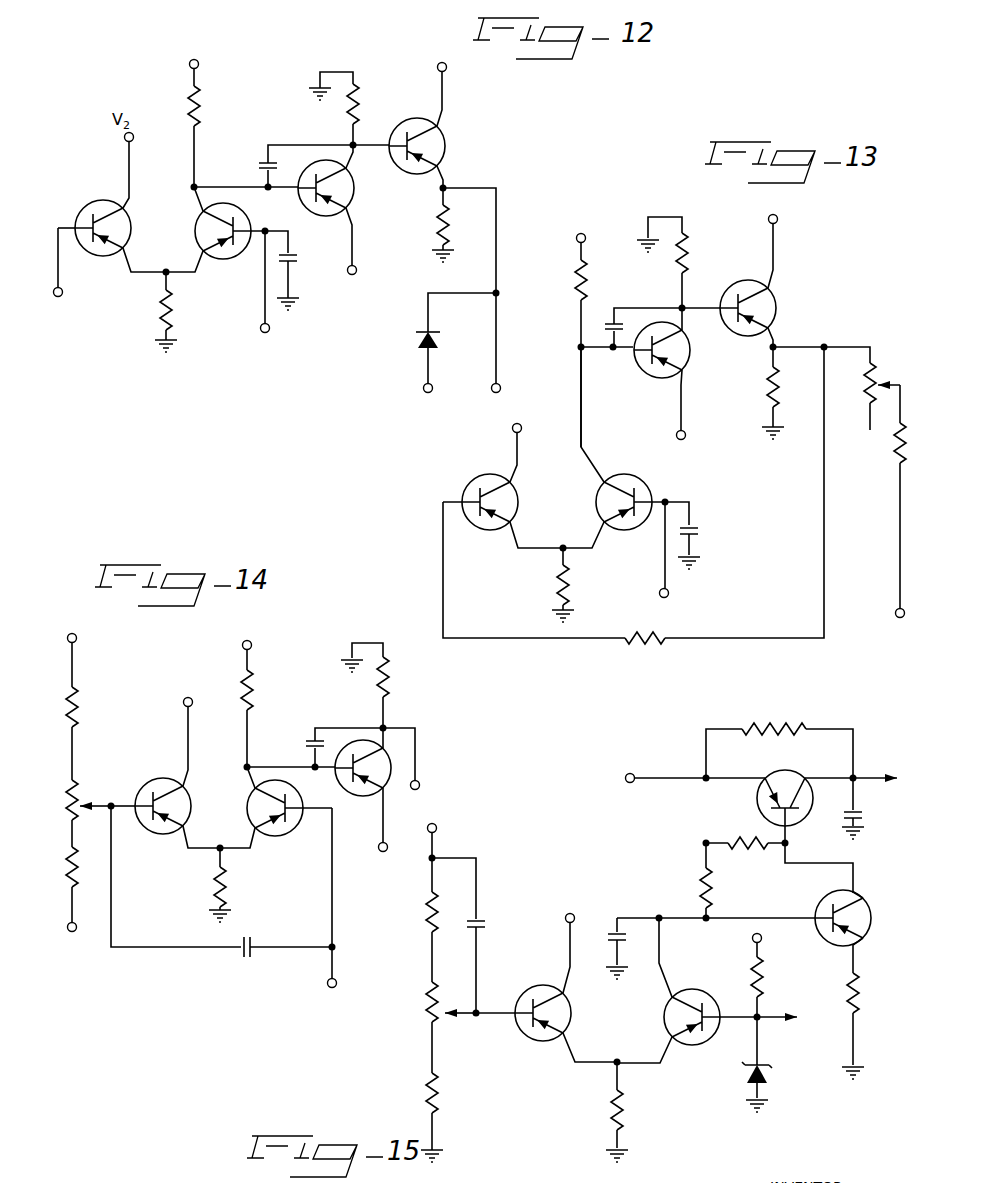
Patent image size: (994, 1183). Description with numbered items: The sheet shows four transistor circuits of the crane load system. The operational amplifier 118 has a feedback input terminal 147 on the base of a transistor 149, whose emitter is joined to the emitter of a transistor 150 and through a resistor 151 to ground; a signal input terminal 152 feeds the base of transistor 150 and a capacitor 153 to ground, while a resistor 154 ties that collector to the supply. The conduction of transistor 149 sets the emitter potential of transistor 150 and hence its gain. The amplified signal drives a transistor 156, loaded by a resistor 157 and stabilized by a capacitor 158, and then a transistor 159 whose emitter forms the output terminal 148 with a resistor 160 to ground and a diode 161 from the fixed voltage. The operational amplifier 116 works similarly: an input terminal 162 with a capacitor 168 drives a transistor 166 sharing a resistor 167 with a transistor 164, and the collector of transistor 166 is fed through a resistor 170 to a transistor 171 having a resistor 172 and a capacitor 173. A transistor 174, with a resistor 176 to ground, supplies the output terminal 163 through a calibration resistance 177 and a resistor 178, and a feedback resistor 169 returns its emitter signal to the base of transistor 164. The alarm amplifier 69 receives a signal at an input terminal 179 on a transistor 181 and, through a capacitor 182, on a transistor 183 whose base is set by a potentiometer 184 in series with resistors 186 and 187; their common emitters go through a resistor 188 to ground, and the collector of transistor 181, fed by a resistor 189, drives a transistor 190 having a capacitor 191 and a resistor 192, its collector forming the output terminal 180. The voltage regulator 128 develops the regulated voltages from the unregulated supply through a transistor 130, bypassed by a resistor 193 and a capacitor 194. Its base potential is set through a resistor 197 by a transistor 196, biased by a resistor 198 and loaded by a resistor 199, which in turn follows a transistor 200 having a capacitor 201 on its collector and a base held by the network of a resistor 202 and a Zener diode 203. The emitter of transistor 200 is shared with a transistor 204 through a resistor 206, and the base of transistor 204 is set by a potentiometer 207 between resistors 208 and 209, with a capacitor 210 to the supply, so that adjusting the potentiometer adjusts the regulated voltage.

In FIG. 12, the operational amplifier 118 is at (462, 131).
In FIG. 12, the terminal 147 is at (69, 284).
In FIG. 12, the terminal 148 is at (498, 386).
In FIG. 12, the transistor 149 is at (94, 209).
In FIG. 12, the transistor 150 is at (195, 232).
In FIG. 12, the resistor 151 is at (175, 315).
In FIG. 12, the terminal 152 is at (270, 328).
In FIG. 12, the capacitor 153 is at (296, 262).
In FIG. 12, the resistor 154 is at (202, 117).
In FIG. 12, the transistor 156 is at (354, 197).
In FIG. 12, the resistor 157 is at (360, 113).
In FIG. 12, the capacitor 158 is at (263, 162).
In FIG. 12, the transistor 159 is at (446, 155).
In FIG. 12, the resistor 160 is at (443, 225).
In FIG. 12, the diode 161 is at (418, 342).
In FIG. 13, the operational amplifier 116 is at (817, 280).
In FIG. 13, the terminal 162 is at (669, 597).
In FIG. 13, the terminal 163 is at (900, 618).
In FIG. 13, the transistor 164 is at (473, 475).
In FIG. 13, the transistor 166 is at (642, 478).
In FIG. 13, the resistor 167 is at (548, 582).
In FIG. 13, the capacitor 168 is at (695, 535).
In FIG. 13, the feedback resistor 169 is at (645, 648).
In FIG. 13, the resistor 170 is at (586, 280).
In FIG. 13, the transistor 171 is at (690, 362).
In FIG. 13, the resistor 172 is at (690, 252).
In FIG. 13, the capacitor 173 is at (612, 317).
In FIG. 13, the transistor 174 is at (777, 305).
In FIG. 13, the resistor 176 is at (773, 383).
In FIG. 13, the calibration resistance 177 is at (875, 375).
In FIG. 13, the resistor 178 is at (895, 465).
In FIG. 14, the alarm amplifier 69 is at (430, 718).
In FIG. 14, the terminal 179 is at (326, 988).
In FIG. 14, the terminal 180 is at (420, 786).
In FIG. 14, the transistor 181 is at (292, 833).
In FIG. 14, the capacitor 182 is at (240, 953).
In FIG. 14, the transistor 183 is at (163, 778).
In FIG. 14, the potentiometer 184 is at (77, 787).
In FIG. 14, the resistor 186 is at (78, 715).
In FIG. 14, the resistor 187 is at (77, 867).
In FIG. 14, the resistor 188 is at (216, 892).
In FIG. 14, the resistor 189 is at (255, 690).
In FIG. 14, the transistor 190 is at (358, 798).
In FIG. 14, the capacitor 191 is at (314, 738).
In FIG. 14, the resistor 192 is at (395, 663).
In FIG. 15, the voltage regulator 128 is at (393, 1058).
In FIG. 15, the transistor 130 is at (792, 773).
In FIG. 15, the resistor 193 is at (773, 723).
In FIG. 15, the capacitor 194 is at (865, 813).
In FIG. 15, the transistor 196 is at (872, 918).
In FIG. 15, the resistor 197 is at (747, 847).
In FIG. 15, the resistor 198 is at (698, 888).
In FIG. 15, the resistor 199 is at (862, 993).
In FIG. 15, the transistor 200 is at (664, 1017).
In FIG. 15, the capacitor 201 is at (618, 947).
In FIG. 15, the resistor 202 is at (767, 975).
In FIG. 15, the Zener diode 203 is at (770, 1072).
In FIG. 15, the transistor 204 is at (533, 1042).
In FIG. 15, the resistor 206 is at (612, 1110).
In FIG. 15, the potentiometer 207 is at (430, 1017).
In FIG. 15, the resistor 208 is at (428, 917).
In FIG. 15, the resistor 209 is at (428, 1087).
In FIG. 15, the capacitor 210 is at (483, 922).